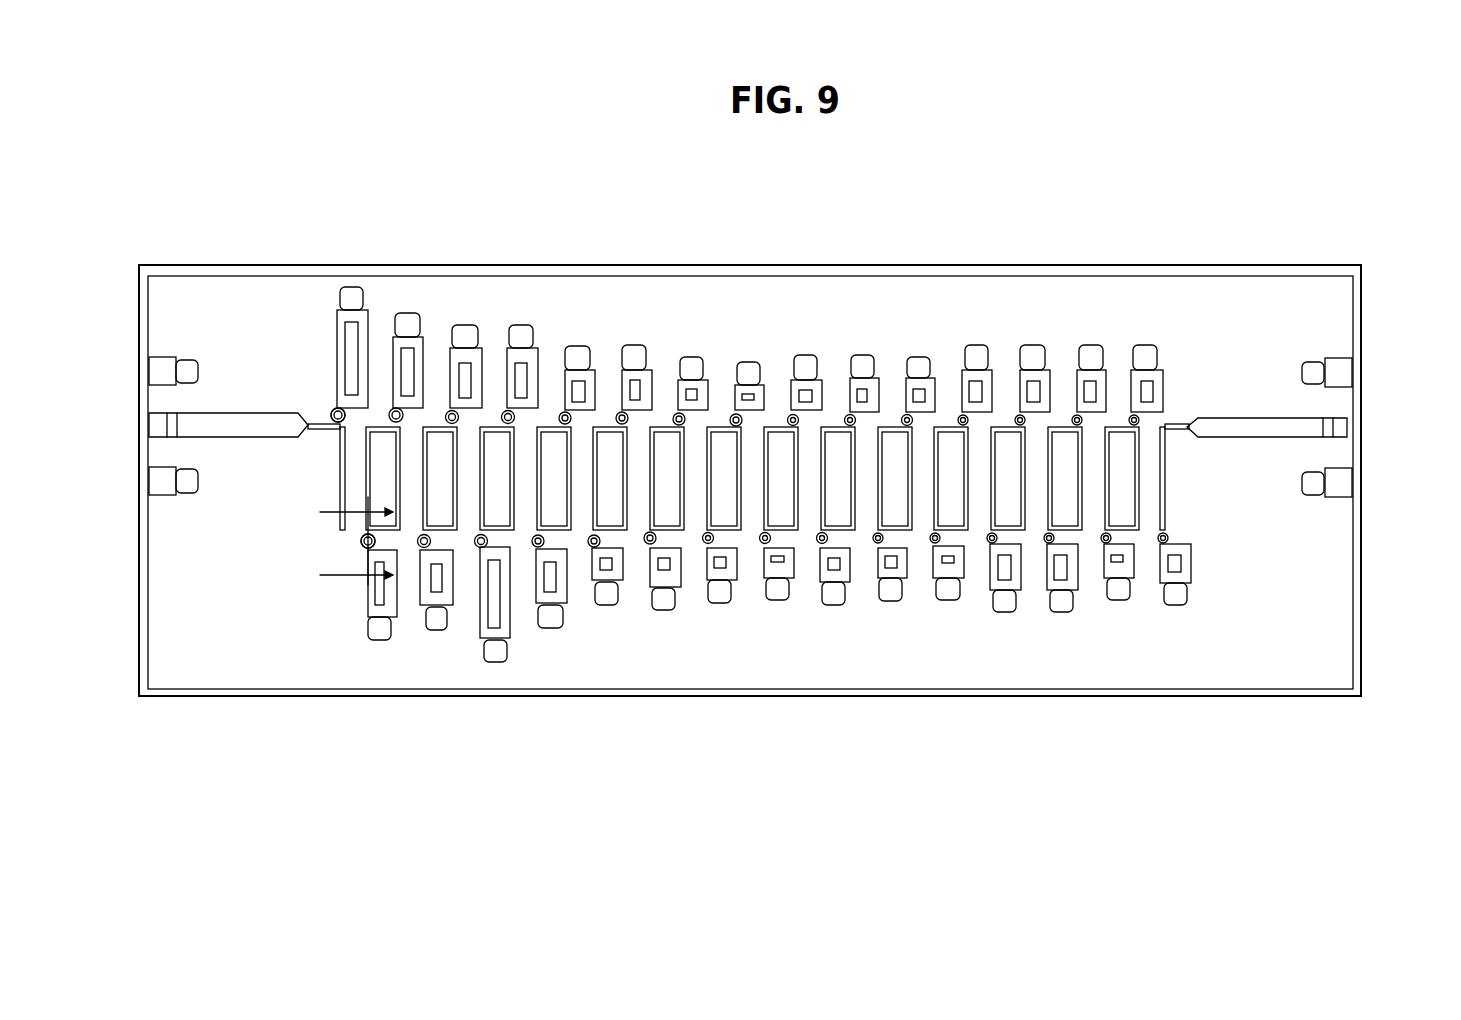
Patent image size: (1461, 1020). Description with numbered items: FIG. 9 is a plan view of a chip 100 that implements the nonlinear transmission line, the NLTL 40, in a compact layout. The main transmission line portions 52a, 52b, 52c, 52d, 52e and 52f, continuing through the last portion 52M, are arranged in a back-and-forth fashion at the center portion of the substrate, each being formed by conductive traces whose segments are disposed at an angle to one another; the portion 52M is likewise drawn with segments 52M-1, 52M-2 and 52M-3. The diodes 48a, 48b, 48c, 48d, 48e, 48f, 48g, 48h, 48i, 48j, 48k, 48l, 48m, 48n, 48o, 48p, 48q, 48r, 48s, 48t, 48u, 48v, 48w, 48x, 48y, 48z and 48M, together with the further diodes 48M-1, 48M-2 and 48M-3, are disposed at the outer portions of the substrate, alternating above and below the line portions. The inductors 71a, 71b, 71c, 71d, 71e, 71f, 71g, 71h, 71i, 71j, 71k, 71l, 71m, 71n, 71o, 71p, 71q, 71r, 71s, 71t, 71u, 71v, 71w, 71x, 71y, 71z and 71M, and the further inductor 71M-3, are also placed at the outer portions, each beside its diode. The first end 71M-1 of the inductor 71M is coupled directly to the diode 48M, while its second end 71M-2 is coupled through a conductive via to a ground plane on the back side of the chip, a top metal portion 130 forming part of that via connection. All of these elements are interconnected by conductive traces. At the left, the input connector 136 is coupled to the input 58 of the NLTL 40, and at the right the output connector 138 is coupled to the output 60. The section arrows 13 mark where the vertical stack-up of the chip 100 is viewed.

The chip 100 is at (163, 318).
The top metal portion 130 is at (340, 293).
The input connector 136 is at (160, 425).
The output connector 138 is at (1340, 425).
The input 58 is at (300, 423).
The output 60 is at (1195, 422).
The NLTL 40 is at (302, 620).
The section line 13 is at (334, 543).
The main transmission line portion 52a is at (330, 423).
The main transmission line portion 52b is at (340, 438).
The main transmission line portion 52c is at (453, 458).
The main transmission line portion 52d is at (361, 542).
The main transmission line portion 52e is at (424, 532).
The main transmission line portion 52f is at (420, 489).
The main transmission line portion 52M is at (1163, 492).
The bus bar end plate 52M-1 is at (1162, 460).
The bus bar plate 52M-2 is at (1050, 470).
The bus bar plate 52M-3 is at (1085, 470).
The diode 48a is at (304, 313).
The diode 48b is at (291, 641).
The diode 48c is at (389, 312).
The diode 48d is at (450, 661).
The diode 48e is at (448, 296).
The diode 48f is at (500, 659).
The diode 48g is at (504, 296).
The diode 48h is at (550, 659).
The diode 48i is at (563, 296).
The diode 48j is at (601, 659).
The diode 48k is at (624, 296).
The diode 48l is at (656, 659).
The diode 48m is at (675, 297).
The diode 48n is at (717, 662).
The diode 48o is at (732, 297).
The diode 48p is at (775, 660).
The diode 48q is at (788, 297).
The diode 48r is at (832, 660).
The diode 48s is at (849, 298).
The diode 48t is at (887, 664).
The diode 48u is at (904, 298).
The diode 48v is at (944, 662).
The diode 48w is at (962, 296).
The diode 48x is at (1001, 662).
The diode 48y is at (1018, 297).
The diode 48z is at (1057, 664).
The diode 48M is at (1177, 659).
The battery cell 48M-1 is at (1144, 297).
The battery cell 48M-2 is at (1115, 662).
The battery cell 48M-3 is at (1075, 297).
The inductor 71a is at (334, 345).
The inductor 71b is at (366, 610).
The inductor 71c is at (394, 340).
The inductor 71d is at (451, 602).
The inductor 71e is at (452, 352).
The inductor 71f is at (508, 635).
The inductor 71g is at (509, 352).
The inductor 71h is at (565, 600).
The inductor 71i is at (567, 374).
The inductor 71j is at (621, 578).
The inductor 71k is at (625, 374).
The inductor 71l is at (679, 584).
The inductor 71m is at (681, 383).
The inductor 71n is at (735, 578).
The inductor 71o is at (738, 388).
The inductor 71p is at (792, 576).
The inductor 71q is at (794, 383).
The inductor 71r is at (848, 580).
The inductor 71s is at (853, 381).
The inductor 71t is at (905, 576).
The inductor 71u is at (909, 381).
The inductor 71v is at (962, 576).
The inductor 71w is at (966, 374).
The inductor 71x is at (1019, 588).
The inductor 71y is at (1024, 374).
The inductor 71z is at (1076, 588).
The inductor 71M is at (1190, 582).
The first end of inductor 71M-1 is at (1135, 376).
The second end of inductor 71M-2 is at (1132, 576).
The cell terminal housing 71M-3 is at (1081, 374).